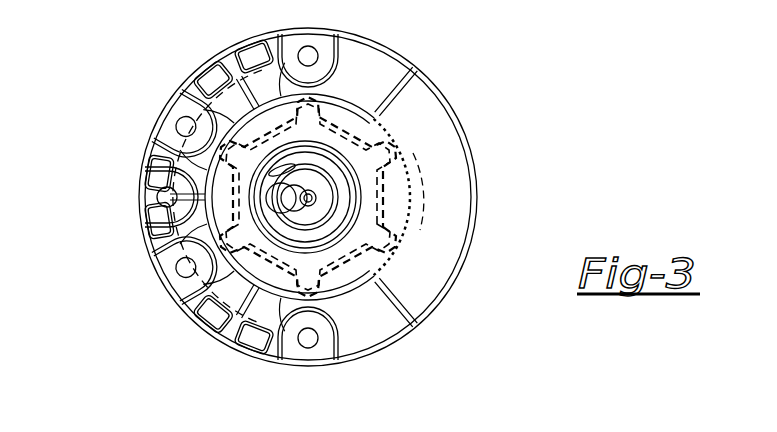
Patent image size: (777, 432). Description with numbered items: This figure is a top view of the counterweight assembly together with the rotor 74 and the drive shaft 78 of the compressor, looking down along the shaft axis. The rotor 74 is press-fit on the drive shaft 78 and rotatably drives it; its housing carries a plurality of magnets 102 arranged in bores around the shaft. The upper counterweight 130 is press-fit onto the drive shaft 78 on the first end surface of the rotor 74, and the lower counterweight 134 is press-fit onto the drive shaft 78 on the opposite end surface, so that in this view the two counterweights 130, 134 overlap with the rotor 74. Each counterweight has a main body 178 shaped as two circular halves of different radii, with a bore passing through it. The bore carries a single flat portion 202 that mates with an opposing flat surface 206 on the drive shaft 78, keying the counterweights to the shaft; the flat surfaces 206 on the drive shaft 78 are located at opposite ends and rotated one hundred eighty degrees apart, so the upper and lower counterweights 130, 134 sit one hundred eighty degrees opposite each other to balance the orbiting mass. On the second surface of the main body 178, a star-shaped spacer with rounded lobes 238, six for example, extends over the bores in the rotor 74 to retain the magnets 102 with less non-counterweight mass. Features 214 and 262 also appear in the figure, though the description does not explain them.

The rotor 74 is at (140, 200).
The drive shaft 78 is at (302, 246).
The magnets 102 is at (262, 105).
The upper counterweight 130 is at (218, 118).
The lower counterweight 134 is at (167, 149).
The main body 178 is at (373, 332).
The flat portion 202 is at (415, 52).
The opposing flat surface 206 is at (378, 108).
The outer ring 214 is at (450, 180).
The lobes 238 is at (215, 145).
The bottom element 262 is at (217, 427).